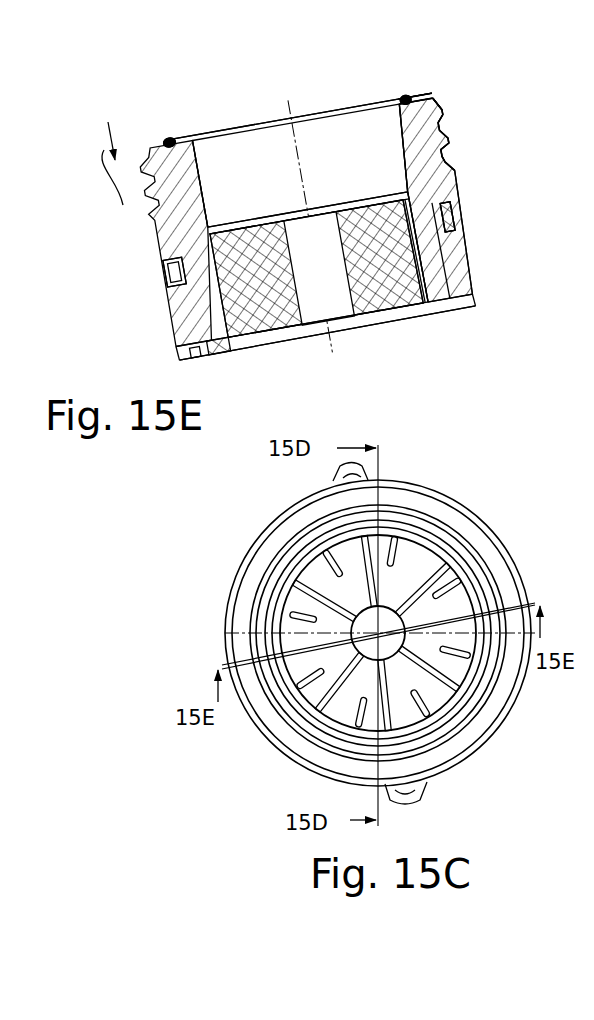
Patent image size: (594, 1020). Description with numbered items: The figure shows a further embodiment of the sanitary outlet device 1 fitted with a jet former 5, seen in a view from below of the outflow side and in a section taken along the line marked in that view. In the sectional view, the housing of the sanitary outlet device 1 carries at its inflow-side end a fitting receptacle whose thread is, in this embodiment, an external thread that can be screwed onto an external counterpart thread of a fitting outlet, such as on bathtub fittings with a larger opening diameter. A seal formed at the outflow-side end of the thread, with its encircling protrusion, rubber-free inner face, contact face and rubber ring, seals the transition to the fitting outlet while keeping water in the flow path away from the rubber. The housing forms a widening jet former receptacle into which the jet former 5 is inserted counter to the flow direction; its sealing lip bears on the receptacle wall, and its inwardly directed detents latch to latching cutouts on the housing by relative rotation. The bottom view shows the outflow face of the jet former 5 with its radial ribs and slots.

In FIG. 15E, the sanitary outlet device 1 is at (343, 227).
In FIG. 15C, the sanitary outlet device 1 is at (388, 630).
In FIG. 15C, the jet former 5 is at (312, 718).